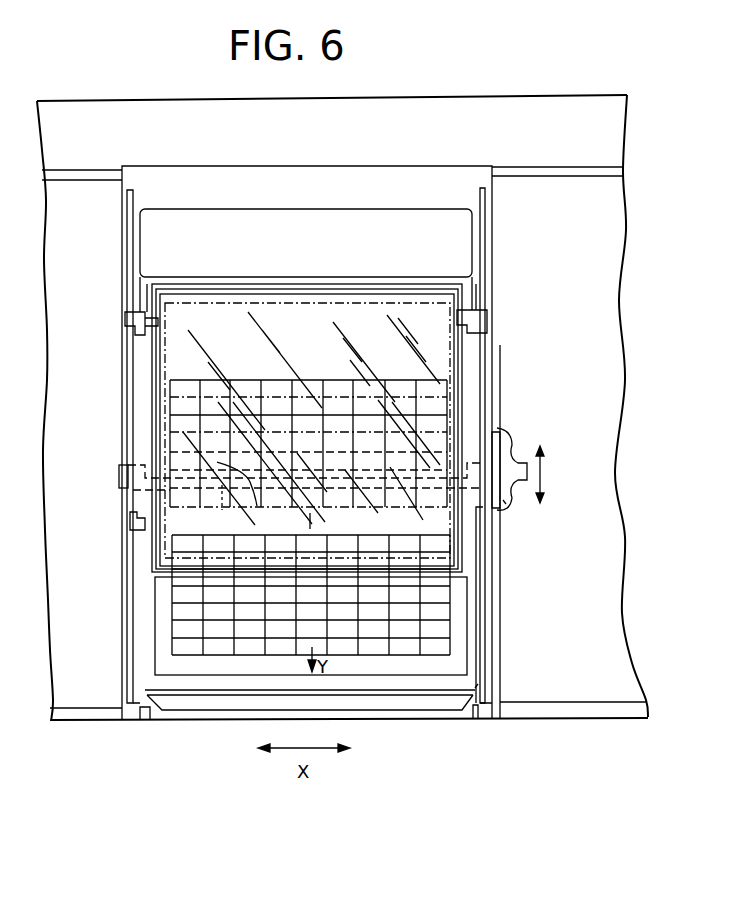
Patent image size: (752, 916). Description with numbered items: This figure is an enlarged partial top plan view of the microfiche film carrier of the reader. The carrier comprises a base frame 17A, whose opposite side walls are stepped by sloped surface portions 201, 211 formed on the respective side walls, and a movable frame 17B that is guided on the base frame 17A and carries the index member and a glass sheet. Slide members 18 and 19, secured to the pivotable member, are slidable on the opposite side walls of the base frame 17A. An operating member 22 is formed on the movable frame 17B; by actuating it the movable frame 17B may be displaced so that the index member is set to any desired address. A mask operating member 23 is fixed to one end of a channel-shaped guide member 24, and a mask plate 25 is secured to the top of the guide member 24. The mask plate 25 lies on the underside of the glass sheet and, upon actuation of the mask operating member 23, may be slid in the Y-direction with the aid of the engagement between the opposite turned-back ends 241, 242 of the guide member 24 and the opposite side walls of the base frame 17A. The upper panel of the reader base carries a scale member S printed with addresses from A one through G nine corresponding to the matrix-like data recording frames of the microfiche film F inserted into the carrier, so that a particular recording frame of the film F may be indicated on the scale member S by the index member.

The base frame 17A is at (405, 190).
The movable frame 17B is at (470, 292).
The slide member 18 is at (472, 323).
The slide member 19 is at (140, 300).
The sloped surface portion 201 is at (482, 515).
The sloped surface portion 211 is at (130, 523).
The operating member 22 is at (417, 702).
The mask operating member 23 is at (502, 500).
The channel-shaped guide member 24 is at (232, 499).
The turned-back end 241 is at (118, 478).
The turned-back end 242 is at (485, 470).
The mask plate 25 is at (285, 524).
The microfiche film F is at (440, 390).
The scale member S is at (452, 627).